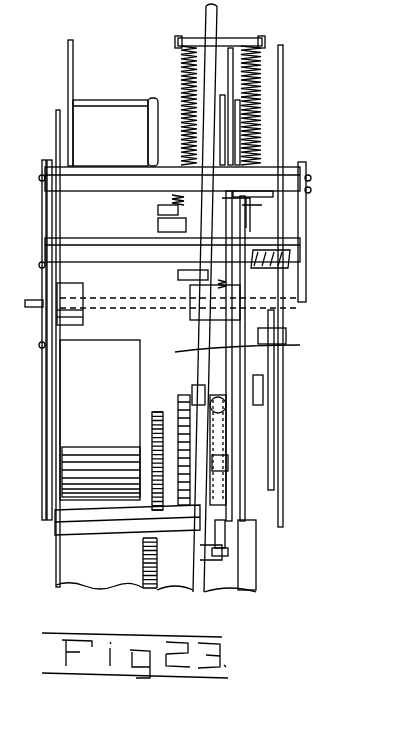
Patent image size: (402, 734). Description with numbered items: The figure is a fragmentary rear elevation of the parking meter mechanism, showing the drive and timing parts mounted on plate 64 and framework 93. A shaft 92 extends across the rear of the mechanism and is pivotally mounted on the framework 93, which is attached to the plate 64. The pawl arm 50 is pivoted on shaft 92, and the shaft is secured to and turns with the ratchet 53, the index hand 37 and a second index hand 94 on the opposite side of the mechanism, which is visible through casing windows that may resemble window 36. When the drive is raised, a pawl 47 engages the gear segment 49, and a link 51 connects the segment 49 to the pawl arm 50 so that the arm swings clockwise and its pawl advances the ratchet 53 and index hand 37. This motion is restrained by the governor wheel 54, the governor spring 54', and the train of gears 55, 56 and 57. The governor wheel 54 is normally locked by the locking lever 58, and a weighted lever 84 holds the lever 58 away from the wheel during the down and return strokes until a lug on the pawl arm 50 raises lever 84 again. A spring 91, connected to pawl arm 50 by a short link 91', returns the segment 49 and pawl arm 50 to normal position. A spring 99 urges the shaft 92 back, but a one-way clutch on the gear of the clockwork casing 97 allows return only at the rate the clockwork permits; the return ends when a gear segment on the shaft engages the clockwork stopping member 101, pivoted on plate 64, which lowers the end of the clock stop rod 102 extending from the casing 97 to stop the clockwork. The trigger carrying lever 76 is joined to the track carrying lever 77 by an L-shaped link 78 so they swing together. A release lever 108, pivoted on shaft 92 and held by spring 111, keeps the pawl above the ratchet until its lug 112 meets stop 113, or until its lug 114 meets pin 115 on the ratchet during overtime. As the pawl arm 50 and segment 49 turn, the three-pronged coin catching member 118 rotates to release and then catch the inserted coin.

The window 36 is at (275, 486).
The index hand 37 is at (284, 432).
The pawl 47 is at (222, 566).
The gear segment 49 is at (226, 404).
The pawl arm 50 is at (262, 242).
The link 51 is at (200, 356).
The ratchet 53 is at (263, 402).
The governor wheel 54 is at (232, 450).
The governor spring 54' is at (129, 437).
The gear 55 is at (192, 398).
The gear 56 is at (152, 474).
The gear 57 is at (228, 466).
The locking lever 58 is at (215, 300).
The plate 64 is at (218, 18).
The trigger carrying lever 76 is at (238, 120).
The track carrying lever 77 is at (250, 84).
The L-shaped link 78 is at (244, 134).
The weighted lever 84 is at (200, 248).
The spring 91 is at (268, 91).
The short link 91' is at (319, 232).
The shaft 92 is at (40, 272).
The framework 93 is at (90, 166).
The second index hand 94 is at (46, 495).
The clockwork casing 97 is at (115, 104).
The spring 99 is at (180, 62).
The clockwork stopping member 101 is at (160, 212).
The clock stop rod 102 is at (158, 228).
The release lever 108 is at (270, 259).
The spring 111 is at (146, 346).
The lug 112 is at (232, 194).
The stop 113 is at (202, 182).
The lug 114 is at (254, 222).
The pin 115 is at (270, 340).
The three-pronged coin catching member 118 is at (226, 532).